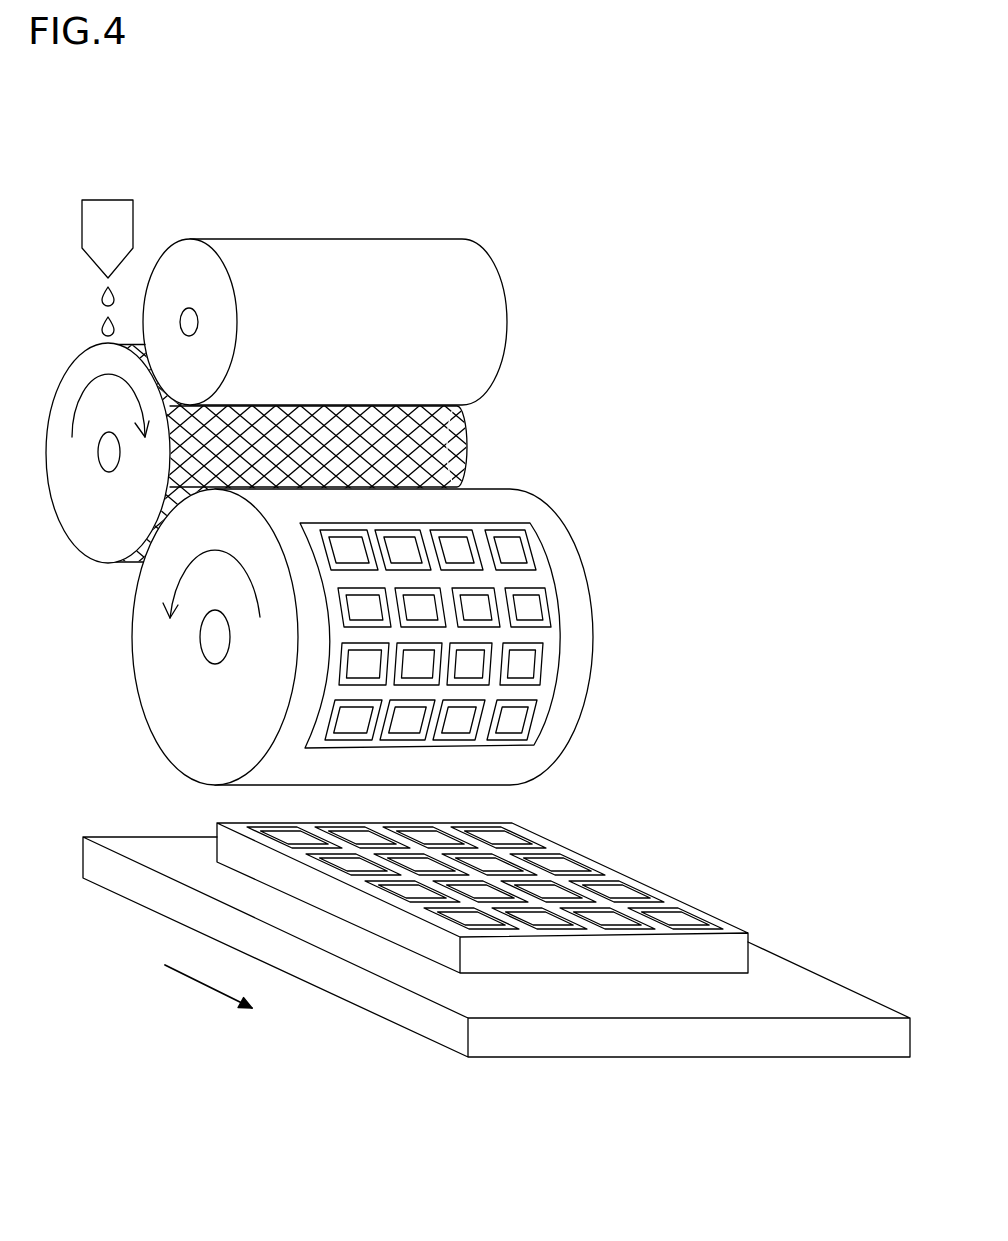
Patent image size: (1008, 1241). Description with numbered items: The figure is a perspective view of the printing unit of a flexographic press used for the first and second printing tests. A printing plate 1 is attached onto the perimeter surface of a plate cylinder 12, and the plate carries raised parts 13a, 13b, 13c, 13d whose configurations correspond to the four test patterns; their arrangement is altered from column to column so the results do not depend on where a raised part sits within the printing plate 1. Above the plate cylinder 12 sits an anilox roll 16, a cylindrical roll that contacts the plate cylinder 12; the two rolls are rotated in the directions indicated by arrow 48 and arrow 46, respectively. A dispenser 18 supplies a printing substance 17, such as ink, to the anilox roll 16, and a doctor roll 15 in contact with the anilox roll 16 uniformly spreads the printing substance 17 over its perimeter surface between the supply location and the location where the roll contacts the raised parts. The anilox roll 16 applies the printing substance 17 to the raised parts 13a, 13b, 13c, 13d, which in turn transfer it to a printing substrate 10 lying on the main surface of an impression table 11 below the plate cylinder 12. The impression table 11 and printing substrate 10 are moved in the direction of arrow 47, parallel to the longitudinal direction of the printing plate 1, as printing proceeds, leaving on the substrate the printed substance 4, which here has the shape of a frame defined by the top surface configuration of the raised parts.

The printing plate 1 is at (543, 693).
The printed substance 4 is at (638, 880).
The printing substrate 10 is at (727, 930).
The impression table 11 is at (832, 990).
The plate cylinder 12 is at (160, 700).
The raised part 13a is at (347, 532).
The raised part 13b is at (403, 532).
The raised part 13c is at (452, 530).
The raised part 13d is at (528, 545).
The doctor roll 15 is at (337, 255).
The anilox roll 16 is at (68, 378).
The printing substance 17 is at (100, 296).
The dispenser 18 is at (108, 213).
The arrow (rotation direction of plate cylinder) 46 is at (177, 583).
The arrow (moving direction of printing substrate) 47 is at (203, 988).
The arrow (rotation direction of anilox roll) 48 is at (87, 413).